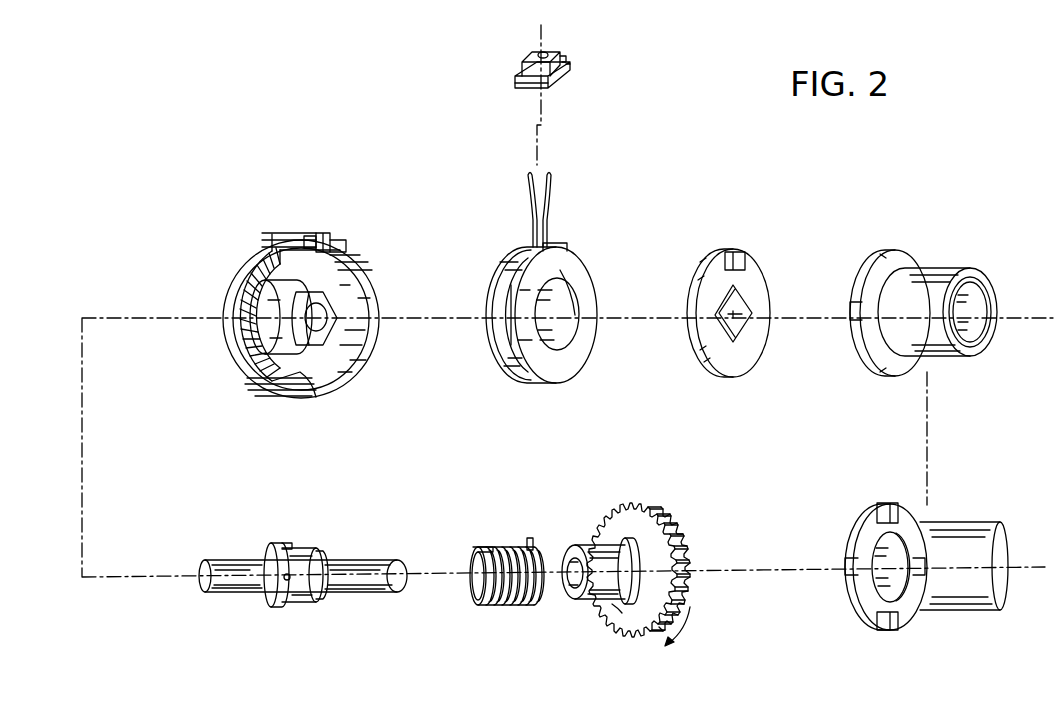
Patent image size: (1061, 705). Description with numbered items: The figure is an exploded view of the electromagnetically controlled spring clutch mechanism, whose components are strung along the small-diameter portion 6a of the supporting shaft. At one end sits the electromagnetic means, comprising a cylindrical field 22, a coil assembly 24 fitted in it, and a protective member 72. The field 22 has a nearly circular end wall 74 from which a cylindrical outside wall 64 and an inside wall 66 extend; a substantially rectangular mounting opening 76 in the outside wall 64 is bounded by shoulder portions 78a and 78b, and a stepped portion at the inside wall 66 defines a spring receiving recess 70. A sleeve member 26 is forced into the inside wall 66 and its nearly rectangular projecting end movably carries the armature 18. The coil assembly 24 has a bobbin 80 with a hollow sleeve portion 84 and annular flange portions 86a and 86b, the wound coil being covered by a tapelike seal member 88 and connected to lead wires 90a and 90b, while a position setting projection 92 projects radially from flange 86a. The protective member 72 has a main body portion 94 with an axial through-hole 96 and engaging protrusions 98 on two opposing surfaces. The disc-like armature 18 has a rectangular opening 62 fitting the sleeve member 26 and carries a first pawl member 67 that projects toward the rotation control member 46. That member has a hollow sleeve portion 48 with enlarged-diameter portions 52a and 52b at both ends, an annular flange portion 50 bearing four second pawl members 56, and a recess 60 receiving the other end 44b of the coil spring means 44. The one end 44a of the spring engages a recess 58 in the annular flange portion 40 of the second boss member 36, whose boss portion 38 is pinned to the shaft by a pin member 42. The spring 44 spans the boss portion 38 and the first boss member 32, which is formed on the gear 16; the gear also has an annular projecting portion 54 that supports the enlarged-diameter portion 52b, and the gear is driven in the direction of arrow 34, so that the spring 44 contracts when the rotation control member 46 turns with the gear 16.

The field 22 is at (309, 402).
The outside wall 64 is at (275, 380).
The end wall 74 is at (268, 265).
The shoulder portion 78a is at (312, 242).
The mounting opening 76 is at (328, 233).
The shoulder portion 78b is at (344, 244).
The inside wall 66 is at (262, 298).
The spring receiving recess 70 is at (292, 280).
The sleeve member 26 is at (298, 340).
The coil assembly 24 is at (548, 283).
The bobbin 80 is at (601, 338).
The hollow sleeve portion 84 is at (570, 308).
The annular flange portion 86a is at (590, 285).
The annular flange portion 86b is at (486, 282).
The seal member 88 is at (502, 345).
The position setting projection 92 is at (560, 246).
The lead wire 90a is at (552, 182).
The lead wire 90b is at (526, 186).
The protective member 72 is at (551, 64).
The main body portion 94 is at (563, 56).
The through-hole 96 is at (540, 53).
The engaging protrusion 98 is at (566, 63).
The armature 18 is at (742, 299).
The rectangular opening 62 is at (740, 308).
The first pawl member 67 is at (744, 253).
The rotation control member 46 is at (922, 443).
The hollow sleeve portion 48 is at (930, 270).
The annular flange portion 50 is at (880, 345).
The enlarged-diameter portion 52a is at (872, 586).
The enlarged-diameter portion 52b is at (988, 333).
The second pawl member 56 is at (850, 314).
The recess 60 is at (962, 276).
The small-diameter portion 6a is at (370, 594).
The second boss member 36 is at (281, 576).
The boss portion 38 is at (300, 548).
The annular flange portion 40 is at (270, 600).
The pin member 42 is at (287, 583).
The recess 58 is at (287, 543).
The coil spring means 44 is at (504, 571).
The one end 44a is at (480, 547).
The other end 44b is at (532, 540).
The first boss member 32 is at (600, 590).
The gear 16 is at (610, 507).
The annular projecting portion 54 is at (617, 612).
The arrow 34 is at (693, 626).